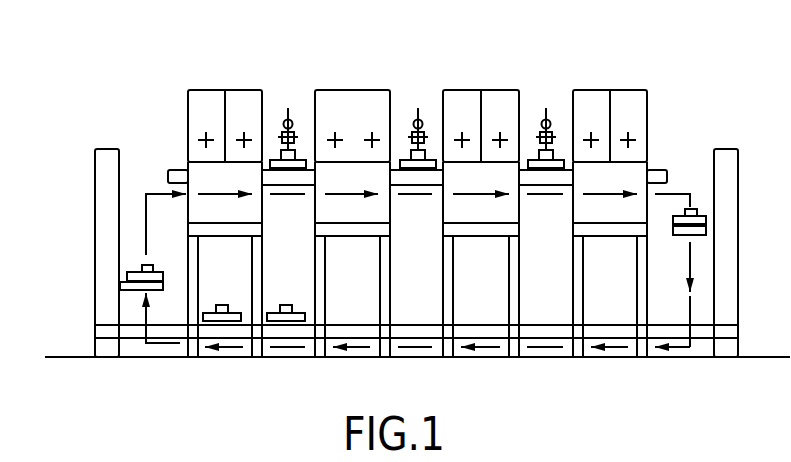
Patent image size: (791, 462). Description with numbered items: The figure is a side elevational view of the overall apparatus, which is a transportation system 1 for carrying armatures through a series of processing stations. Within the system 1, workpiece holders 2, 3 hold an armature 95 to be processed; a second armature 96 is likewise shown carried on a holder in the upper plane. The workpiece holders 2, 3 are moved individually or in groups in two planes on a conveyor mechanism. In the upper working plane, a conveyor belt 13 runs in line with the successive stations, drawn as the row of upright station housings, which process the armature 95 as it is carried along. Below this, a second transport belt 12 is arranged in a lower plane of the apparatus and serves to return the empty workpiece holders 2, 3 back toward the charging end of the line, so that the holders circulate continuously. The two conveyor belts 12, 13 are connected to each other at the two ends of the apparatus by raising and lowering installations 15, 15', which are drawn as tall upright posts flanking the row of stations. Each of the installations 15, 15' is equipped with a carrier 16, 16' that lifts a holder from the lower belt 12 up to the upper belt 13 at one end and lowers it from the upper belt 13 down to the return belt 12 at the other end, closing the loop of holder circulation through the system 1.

The transportation system 1 is at (152, 191).
The workpiece holder 2 is at (297, 91).
The workpiece holder 3 is at (300, 160).
The armature 95 is at (420, 112).
The workpiece 96 is at (548, 112).
The conveyor belt 13 is at (658, 178).
The raising and lowering installation 15 is at (82, 253).
The raising and lowering installation 15' is at (752, 253).
The carrier 16 is at (104, 280).
The carrier 16' is at (732, 227).
The second transport belt 12 is at (715, 333).